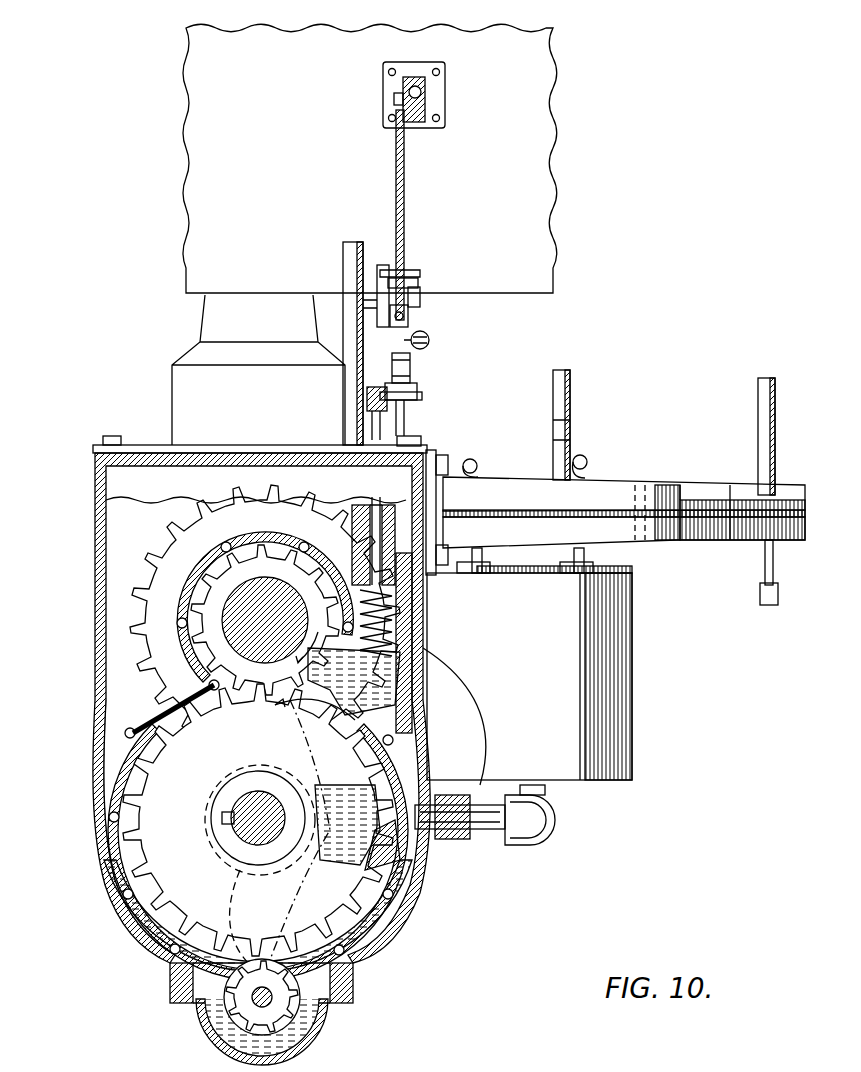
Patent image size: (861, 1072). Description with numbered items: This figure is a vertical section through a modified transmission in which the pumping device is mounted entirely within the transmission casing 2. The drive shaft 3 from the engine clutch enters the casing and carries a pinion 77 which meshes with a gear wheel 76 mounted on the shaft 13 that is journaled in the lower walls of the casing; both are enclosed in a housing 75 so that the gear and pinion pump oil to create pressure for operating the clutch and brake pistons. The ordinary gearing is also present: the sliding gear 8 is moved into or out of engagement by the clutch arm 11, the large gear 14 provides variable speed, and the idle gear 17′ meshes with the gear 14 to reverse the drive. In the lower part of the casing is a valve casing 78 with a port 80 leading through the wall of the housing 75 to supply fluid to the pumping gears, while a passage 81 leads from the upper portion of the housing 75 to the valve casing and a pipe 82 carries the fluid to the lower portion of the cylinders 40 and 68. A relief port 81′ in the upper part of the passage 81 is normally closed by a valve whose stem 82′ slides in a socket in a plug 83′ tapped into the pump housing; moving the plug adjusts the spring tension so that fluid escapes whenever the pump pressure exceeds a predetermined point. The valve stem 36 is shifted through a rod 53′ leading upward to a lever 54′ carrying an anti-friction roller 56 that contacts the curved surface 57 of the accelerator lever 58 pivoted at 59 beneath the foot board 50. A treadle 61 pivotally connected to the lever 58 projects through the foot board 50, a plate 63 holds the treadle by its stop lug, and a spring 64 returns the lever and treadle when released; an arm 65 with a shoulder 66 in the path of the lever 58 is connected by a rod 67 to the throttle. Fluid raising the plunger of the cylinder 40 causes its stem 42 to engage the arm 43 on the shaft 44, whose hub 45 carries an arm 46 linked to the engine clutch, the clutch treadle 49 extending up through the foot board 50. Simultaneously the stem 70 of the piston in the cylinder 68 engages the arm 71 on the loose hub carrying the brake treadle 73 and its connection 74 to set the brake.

The transmission casing 2 is at (108, 785).
The drive shaft 3 is at (190, 556).
The gear 8 is at (255, 517).
The clutch arm 11 is at (100, 462).
The shaft 13 is at (230, 812).
The gear 14 is at (225, 548).
The idle gear 17′ is at (420, 687).
The valve stem 36 is at (232, 1000).
The cylinder 40 is at (478, 597).
The stem 42 is at (482, 552).
The arm 43 is at (470, 468).
The shaft 44 is at (750, 488).
The hub 45 is at (803, 507).
The arm 46 is at (768, 557).
The treadle 49 is at (768, 423).
The foot board 50 is at (542, 132).
The rod 53′ is at (405, 440).
The lever 54′ is at (392, 410).
The anti-friction roller 56 is at (420, 390).
The curved surface 57 is at (405, 370).
The accelerator lever 58 is at (403, 165).
The pivot 59 is at (420, 297).
The treadle 61 is at (443, 80).
The plate 63 is at (436, 100).
The spring 64 is at (430, 340).
The arm 65 is at (383, 300).
The shoulder 66 is at (405, 280).
The rod 67 is at (417, 313).
The cylinder 68 is at (632, 620).
The stem 70 is at (585, 552).
The arm 71 is at (583, 455).
The treadle 73 is at (568, 393).
The connection 74 is at (573, 430).
The housing 75 is at (205, 625).
The gear wheel 76 is at (125, 765).
The pinion 77 is at (230, 603).
The valve casing 78 is at (190, 1023).
The port 80 is at (170, 993).
The passage 81 is at (417, 875).
The port 81′ is at (413, 655).
The pipe 82 is at (483, 833).
The stem 82′ is at (393, 548).
The plug 83′ is at (393, 522).